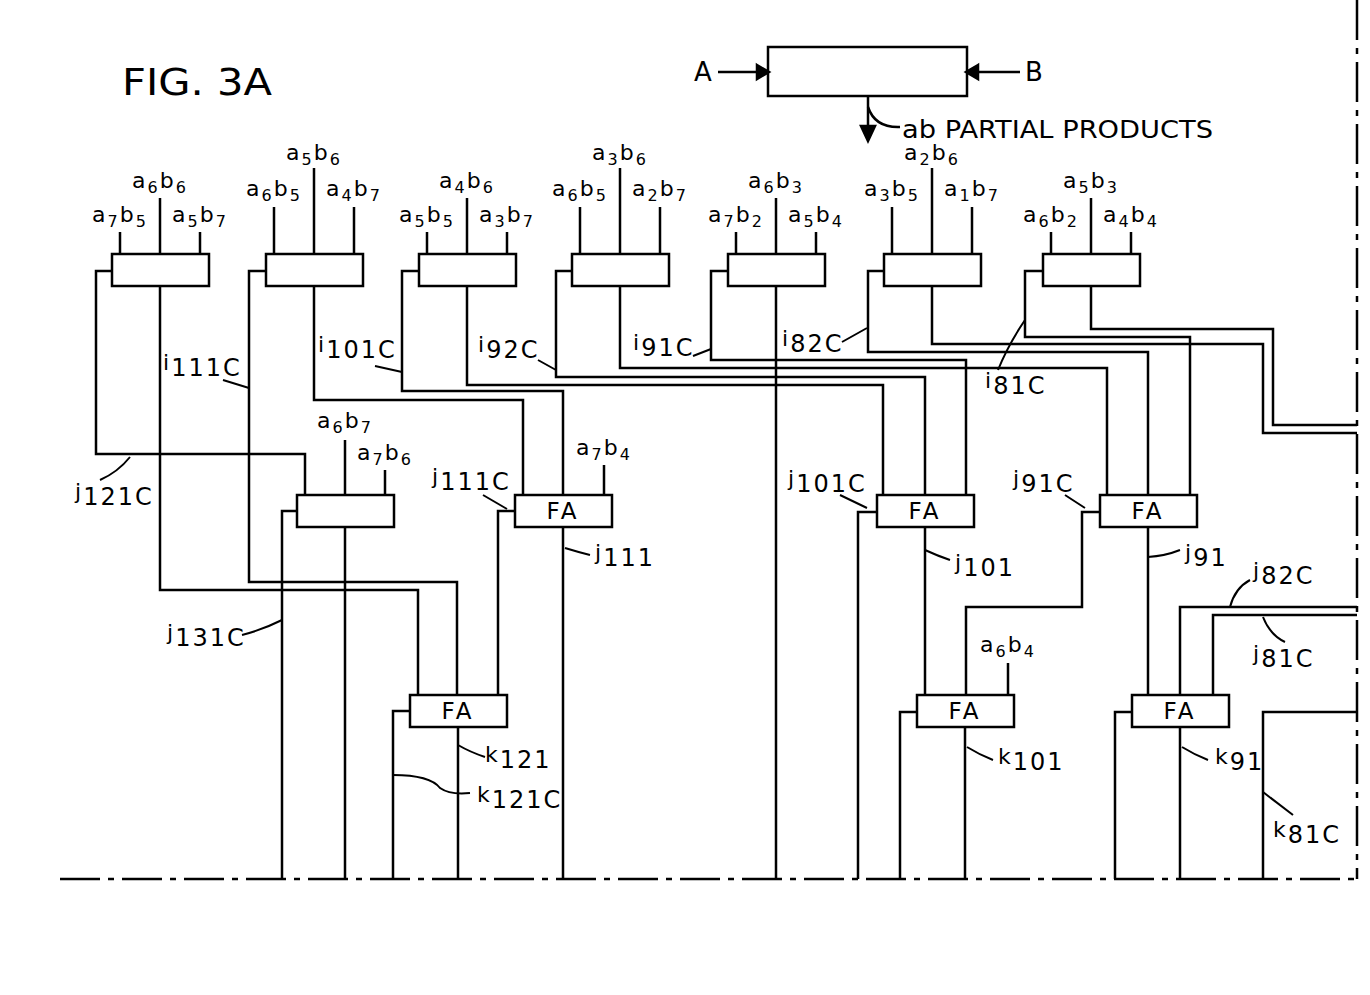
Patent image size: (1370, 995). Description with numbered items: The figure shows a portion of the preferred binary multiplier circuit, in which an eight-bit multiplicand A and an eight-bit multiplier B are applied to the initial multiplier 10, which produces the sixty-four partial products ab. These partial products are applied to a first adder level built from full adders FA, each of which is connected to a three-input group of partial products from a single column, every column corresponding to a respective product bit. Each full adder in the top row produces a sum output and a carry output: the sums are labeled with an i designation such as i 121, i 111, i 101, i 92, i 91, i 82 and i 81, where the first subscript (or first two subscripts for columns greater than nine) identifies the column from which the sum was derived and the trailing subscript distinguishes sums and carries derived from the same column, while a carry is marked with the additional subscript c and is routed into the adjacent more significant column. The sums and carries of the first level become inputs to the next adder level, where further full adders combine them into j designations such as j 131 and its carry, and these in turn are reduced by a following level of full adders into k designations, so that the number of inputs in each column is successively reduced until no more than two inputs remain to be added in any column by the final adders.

The initial multiplier 10 is at (781, 98).
The full adder producing i121 121 is at (160, 302).
The full adder producing i111 111 is at (314, 302).
The full adder producing i101 101 is at (467, 302).
The full adder producing i92 92 is at (620, 302).
The full adder producing i91 91 is at (776, 302).
The full adder producing i82 82 is at (932, 302).
The full adder producing i81 81 is at (1091, 302).
The full adder producing j131C 131 is at (345, 547).